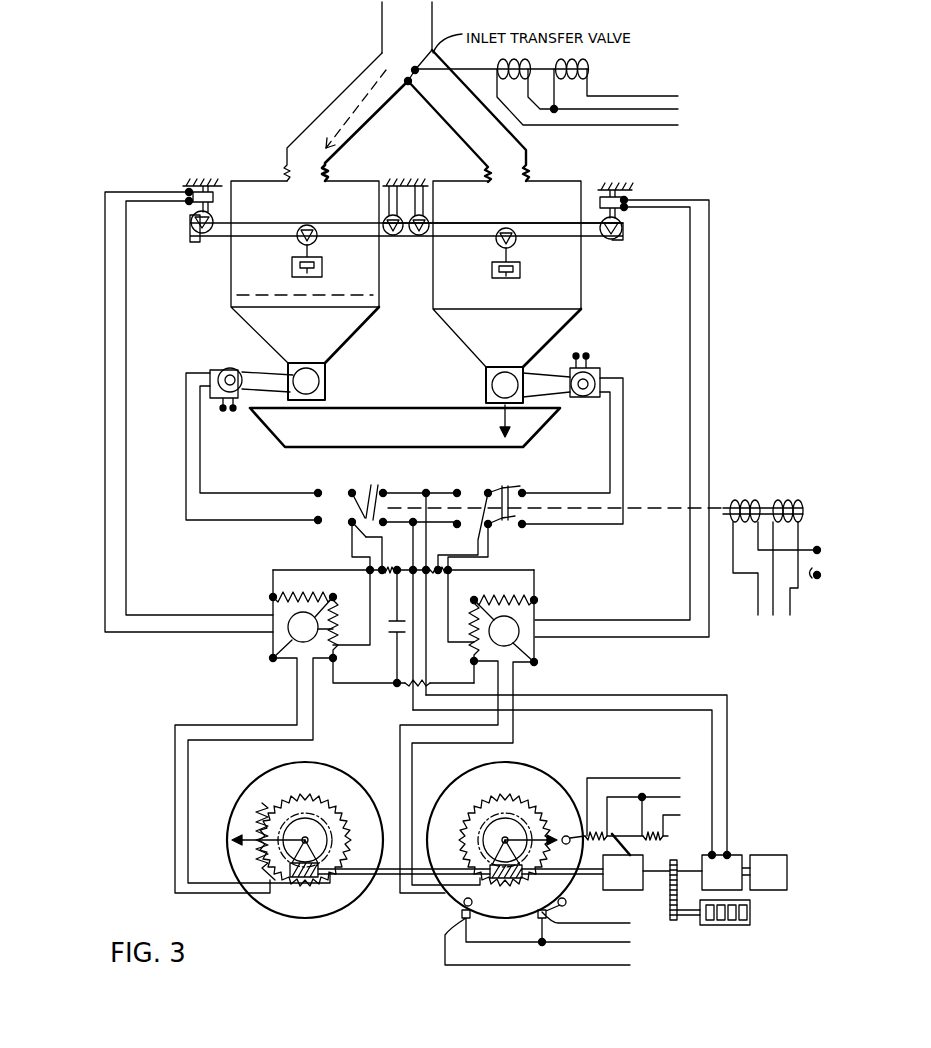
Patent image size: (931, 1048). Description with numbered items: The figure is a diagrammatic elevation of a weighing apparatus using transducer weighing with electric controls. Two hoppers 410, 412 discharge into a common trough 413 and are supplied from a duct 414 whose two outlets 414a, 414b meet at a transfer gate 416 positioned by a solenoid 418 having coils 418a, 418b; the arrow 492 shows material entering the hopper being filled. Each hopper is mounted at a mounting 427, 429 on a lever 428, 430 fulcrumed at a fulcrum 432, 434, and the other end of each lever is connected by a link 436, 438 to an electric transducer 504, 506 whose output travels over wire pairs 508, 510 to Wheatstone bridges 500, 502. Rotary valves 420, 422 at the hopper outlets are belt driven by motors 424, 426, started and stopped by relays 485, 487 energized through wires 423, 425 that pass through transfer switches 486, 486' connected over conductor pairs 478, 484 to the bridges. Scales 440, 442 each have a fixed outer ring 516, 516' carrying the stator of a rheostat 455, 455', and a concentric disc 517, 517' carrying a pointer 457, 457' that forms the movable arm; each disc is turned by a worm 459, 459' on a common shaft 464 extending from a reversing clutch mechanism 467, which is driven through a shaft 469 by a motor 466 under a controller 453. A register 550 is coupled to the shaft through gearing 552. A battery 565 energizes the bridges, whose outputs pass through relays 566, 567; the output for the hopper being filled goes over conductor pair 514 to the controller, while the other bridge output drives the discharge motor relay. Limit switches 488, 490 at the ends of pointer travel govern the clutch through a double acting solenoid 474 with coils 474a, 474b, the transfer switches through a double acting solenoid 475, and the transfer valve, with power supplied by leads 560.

The duct 414 is at (380, 21).
The transfer gate 416 is at (412, 62).
The arrow 492 is at (362, 97).
The outlet 414a is at (337, 98).
The outlet 414b is at (452, 130).
The solenoid 418 is at (598, 75).
The coil 418a is at (505, 60).
The coil 418b is at (570, 60).
The hopper 410 is at (231, 296).
The hopper 412 is at (581, 300).
The lever 428 is at (357, 232).
The lever 430 is at (470, 228).
The link 436 is at (192, 210).
The link 438 is at (623, 213).
The electric transducer 504 is at (188, 191).
The electric transducer 506 is at (625, 199).
The mounting 427 is at (307, 225).
The mounting 429 is at (510, 228).
The fulcrum 432 is at (393, 236).
The fulcrum 434 is at (420, 237).
The wire pair 508 is at (103, 340).
The wire pair 510 is at (711, 363).
The rotary valve 420 is at (319, 378).
The rotary valve 422 is at (492, 385).
The motor 424 is at (228, 368).
The motor 426 is at (585, 398).
The relay 485 is at (212, 372).
The relay 487 is at (598, 370).
The trough 413 is at (532, 444).
The wires 423 is at (255, 470).
The wires 425 is at (629, 474).
The transfer switch 486 is at (512, 495).
The transfer switch 486' is at (513, 495).
The conductor pair 478 is at (346, 556).
The conductor pair 484 is at (497, 555).
The double acting solenoid 475 is at (790, 497).
The leads 560 is at (815, 580).
The Wheatstone bridge 500 is at (263, 596).
The Wheatstone bridge 502 is at (552, 598).
The relay 566 is at (290, 637).
The relay 567 is at (518, 640).
The battery 565 is at (386, 643).
The conductor pair 514 is at (406, 697).
The scale 440 is at (246, 786).
The scale 442 is at (550, 770).
The fixed outer ring 516 is at (323, 826).
The fixed outer ring 516' is at (505, 815).
The disc 517 is at (292, 805).
The disc 517' is at (516, 795).
The rheostat 455 is at (317, 802).
The rheostat 455' is at (473, 812).
The pointer 457 is at (234, 841).
The pointer 457' is at (580, 875).
The worm 459 is at (299, 892).
The worm 459' is at (507, 891).
The common shaft 464 is at (385, 878).
The limit switch 488 is at (468, 920).
The limit switch 490 is at (545, 920).
The double acting solenoid 474 is at (617, 811).
The coil 474a is at (590, 830).
The coil 474b is at (657, 832).
The reversing clutch mechanism 467 is at (619, 890).
The shaft 469 is at (656, 868).
The gearing 552 is at (672, 919).
The controller 453 is at (727, 854).
The motor 466 is at (790, 855).
The register 550 is at (730, 926).